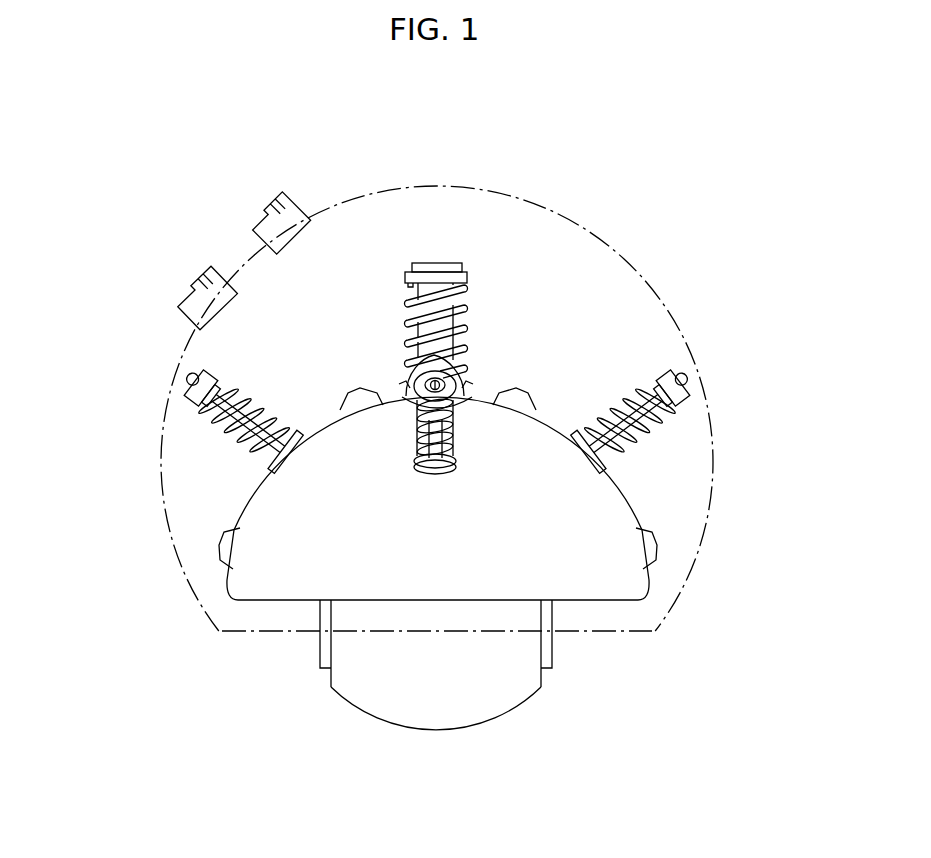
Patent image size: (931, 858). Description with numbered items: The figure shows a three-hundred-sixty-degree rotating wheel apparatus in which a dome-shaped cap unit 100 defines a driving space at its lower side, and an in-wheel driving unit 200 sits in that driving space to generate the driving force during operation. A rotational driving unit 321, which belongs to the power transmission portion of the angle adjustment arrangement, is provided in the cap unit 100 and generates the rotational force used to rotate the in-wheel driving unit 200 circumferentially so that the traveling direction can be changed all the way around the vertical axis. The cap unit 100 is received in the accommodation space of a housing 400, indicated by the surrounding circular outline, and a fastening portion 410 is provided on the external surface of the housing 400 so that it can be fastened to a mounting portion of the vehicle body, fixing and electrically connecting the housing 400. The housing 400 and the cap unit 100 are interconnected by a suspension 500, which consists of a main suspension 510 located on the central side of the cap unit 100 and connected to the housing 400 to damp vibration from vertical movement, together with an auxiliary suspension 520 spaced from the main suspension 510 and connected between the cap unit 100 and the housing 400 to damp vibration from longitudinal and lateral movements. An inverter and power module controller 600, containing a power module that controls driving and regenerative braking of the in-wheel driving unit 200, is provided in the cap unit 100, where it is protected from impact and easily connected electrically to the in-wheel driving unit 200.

The cap unit 100 is at (648, 593).
The in-wheel driving unit 200 is at (513, 712).
The rotational driving unit 321 is at (222, 548).
The housing 400 is at (575, 217).
The fastening portion 410 is at (205, 289).
The suspension 500 is at (463, 262).
The main suspension 510 is at (437, 280).
The auxiliary suspension 520 is at (190, 382).
The inverter and power module controller 600 is at (358, 397).